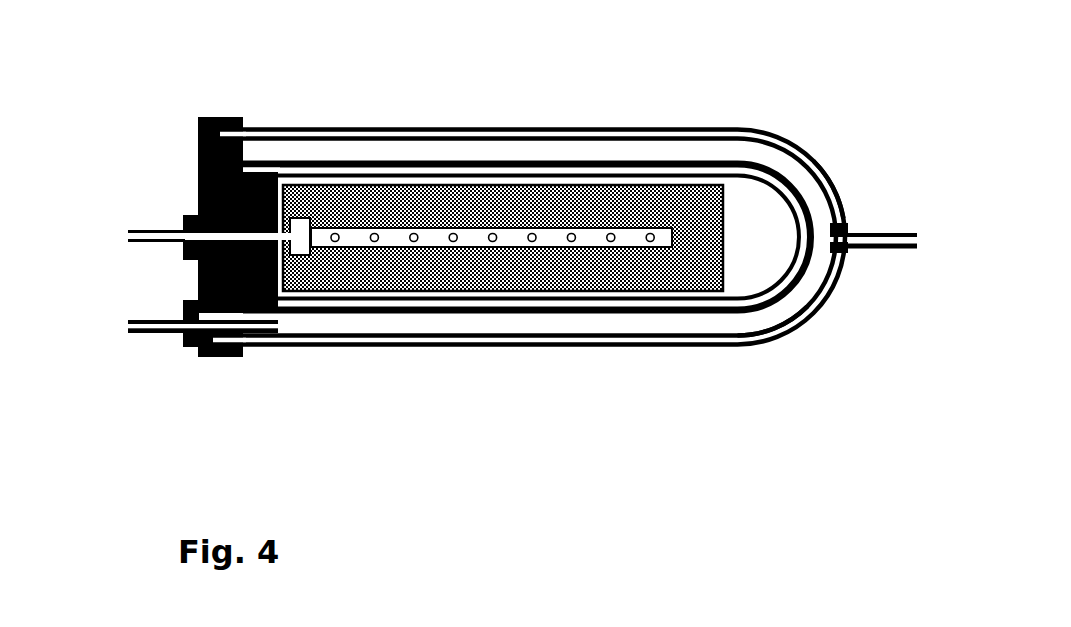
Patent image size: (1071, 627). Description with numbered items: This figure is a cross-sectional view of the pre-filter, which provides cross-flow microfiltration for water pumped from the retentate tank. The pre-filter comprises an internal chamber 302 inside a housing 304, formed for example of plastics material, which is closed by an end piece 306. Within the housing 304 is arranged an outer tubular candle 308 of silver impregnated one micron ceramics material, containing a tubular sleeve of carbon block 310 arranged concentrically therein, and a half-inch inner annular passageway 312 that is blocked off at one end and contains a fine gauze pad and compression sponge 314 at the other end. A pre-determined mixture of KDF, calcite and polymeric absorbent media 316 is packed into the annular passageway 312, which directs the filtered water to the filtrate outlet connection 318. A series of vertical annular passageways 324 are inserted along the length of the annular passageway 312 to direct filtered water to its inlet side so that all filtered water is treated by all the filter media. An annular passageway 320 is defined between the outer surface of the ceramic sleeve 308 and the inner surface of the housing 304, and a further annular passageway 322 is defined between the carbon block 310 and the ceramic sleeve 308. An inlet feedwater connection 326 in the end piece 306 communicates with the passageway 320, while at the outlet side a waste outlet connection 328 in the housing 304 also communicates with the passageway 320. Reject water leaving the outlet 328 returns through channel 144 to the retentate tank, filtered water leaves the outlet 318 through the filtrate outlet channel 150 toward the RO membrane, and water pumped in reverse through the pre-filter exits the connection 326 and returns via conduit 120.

The conduit 120 is at (137, 333).
The channel 144 is at (910, 232).
The filtrate outlet channel 150 is at (128, 230).
The internal chamber 302 is at (828, 220).
The housing 304 is at (570, 137).
The end piece 306 is at (198, 153).
The outer tubular candle 308 is at (517, 165).
The tubular sleeve of carbon block 310 is at (695, 222).
The inner annular passageway 312 is at (532, 237).
The fine gauze pad and compression sponge 314 is at (303, 232).
The mixture of KDF, calcite and polymeric absorbent media 316 is at (634, 233).
The filtrate outlet connection 318 is at (183, 213).
The annular passageway 320 is at (787, 308).
The further annular passageway 322 is at (343, 183).
The vertical annular passageways 324 is at (452, 233).
The inlet feedwater connection 326 is at (188, 350).
The waste outlet connection 328 is at (852, 252).